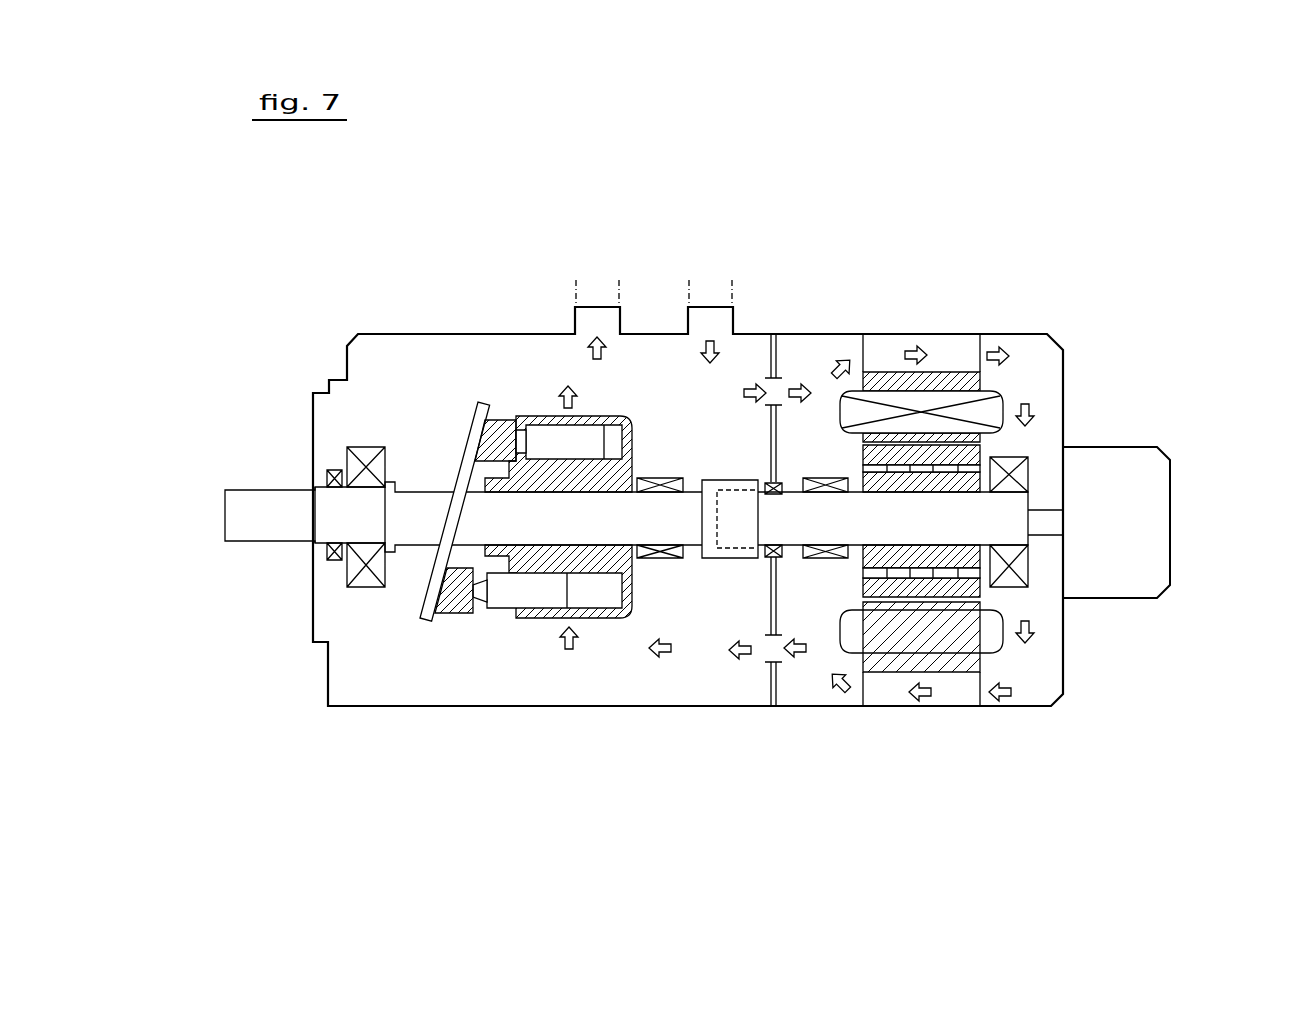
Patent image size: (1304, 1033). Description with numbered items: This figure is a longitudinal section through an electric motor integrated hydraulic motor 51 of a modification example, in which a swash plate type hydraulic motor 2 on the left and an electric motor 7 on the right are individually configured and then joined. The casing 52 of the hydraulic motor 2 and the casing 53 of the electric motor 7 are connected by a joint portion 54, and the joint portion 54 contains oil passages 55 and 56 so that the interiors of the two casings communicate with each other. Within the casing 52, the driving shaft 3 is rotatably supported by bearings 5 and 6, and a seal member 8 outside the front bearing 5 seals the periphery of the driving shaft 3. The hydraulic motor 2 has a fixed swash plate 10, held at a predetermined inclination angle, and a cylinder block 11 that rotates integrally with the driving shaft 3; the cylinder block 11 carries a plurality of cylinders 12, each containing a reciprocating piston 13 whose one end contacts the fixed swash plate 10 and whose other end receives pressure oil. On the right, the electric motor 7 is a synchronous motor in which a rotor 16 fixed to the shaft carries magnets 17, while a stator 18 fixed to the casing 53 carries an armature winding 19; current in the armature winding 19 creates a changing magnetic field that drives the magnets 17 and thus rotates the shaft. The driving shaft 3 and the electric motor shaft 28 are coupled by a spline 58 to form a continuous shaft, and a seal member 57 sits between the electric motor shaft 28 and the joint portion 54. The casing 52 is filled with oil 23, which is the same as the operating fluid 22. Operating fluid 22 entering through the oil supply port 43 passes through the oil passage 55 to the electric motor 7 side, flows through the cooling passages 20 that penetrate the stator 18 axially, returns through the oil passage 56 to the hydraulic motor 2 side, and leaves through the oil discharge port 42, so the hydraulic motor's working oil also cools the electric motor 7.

The swash plate type hydraulic motor 2 is at (535, 367).
The driving shaft 3 is at (263, 530).
The bearing 5 is at (363, 577).
The bearing 6 is at (653, 560).
The electric motor 7 is at (1022, 383).
The seal member 8 is at (335, 562).
The fixed swash plate 10 is at (478, 436).
The cylinder block 11 is at (598, 417).
The cylinder 12 is at (599, 612).
The piston 13 is at (542, 593).
The rotor 16 is at (982, 592).
The magnet 17 is at (903, 605).
The stator 18 is at (892, 361).
The armature winding 19 is at (993, 401).
The cooling passage 20 is at (958, 357).
The operating fluid 22 is at (700, 352).
The oil 23 is at (379, 413).
The electric motor shaft 28 is at (1005, 522).
The oil discharge port 42 is at (605, 305).
The oil supply port 43 is at (712, 305).
The electric motor integrated hydraulic motor 51 is at (1230, 222).
The casing 52 is at (348, 338).
The casing 53 is at (1058, 338).
The joint portion 54 is at (777, 360).
The oil passage 55 is at (782, 385).
The oil passage 56 is at (770, 650).
The seal member 57 is at (772, 560).
The spline 58 is at (715, 560).